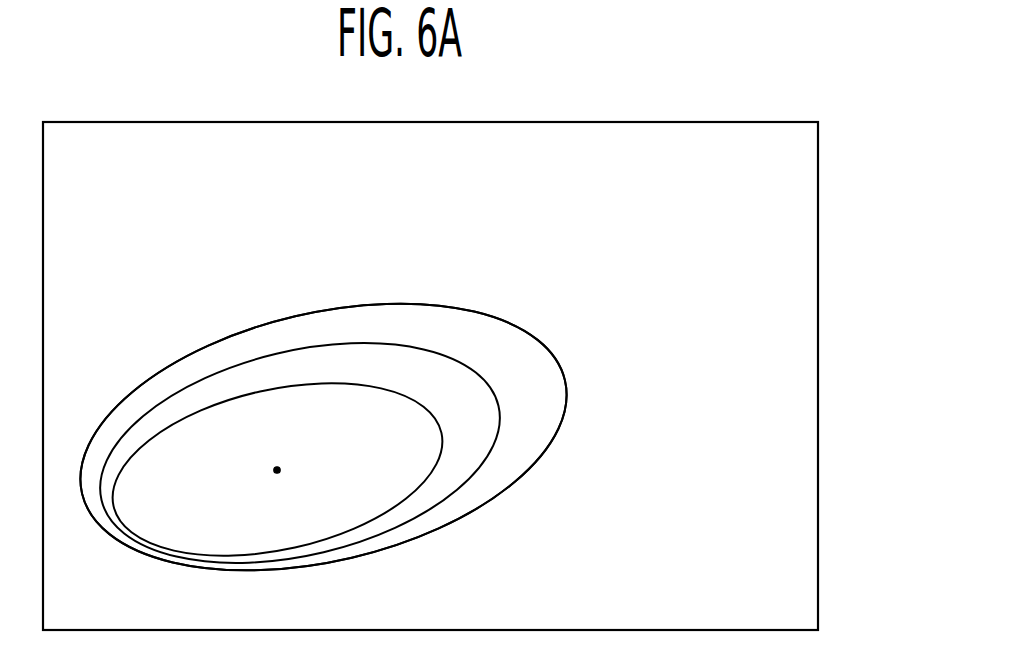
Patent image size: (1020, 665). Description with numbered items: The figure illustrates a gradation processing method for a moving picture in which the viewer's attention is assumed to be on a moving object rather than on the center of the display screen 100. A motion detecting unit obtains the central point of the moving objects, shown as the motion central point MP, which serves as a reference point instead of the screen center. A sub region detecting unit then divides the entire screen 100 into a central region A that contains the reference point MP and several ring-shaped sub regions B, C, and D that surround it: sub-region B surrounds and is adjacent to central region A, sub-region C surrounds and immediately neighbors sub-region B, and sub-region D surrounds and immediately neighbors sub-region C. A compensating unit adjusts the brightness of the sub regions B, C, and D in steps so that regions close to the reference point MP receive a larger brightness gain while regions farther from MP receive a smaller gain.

The screen 100 is at (713, 122).
The central region A is at (277, 469).
The sub-region B is at (300, 453).
The sub-region C is at (324, 437).
The sub-region D is at (324, 437).
The motion central point MP is at (277, 492).